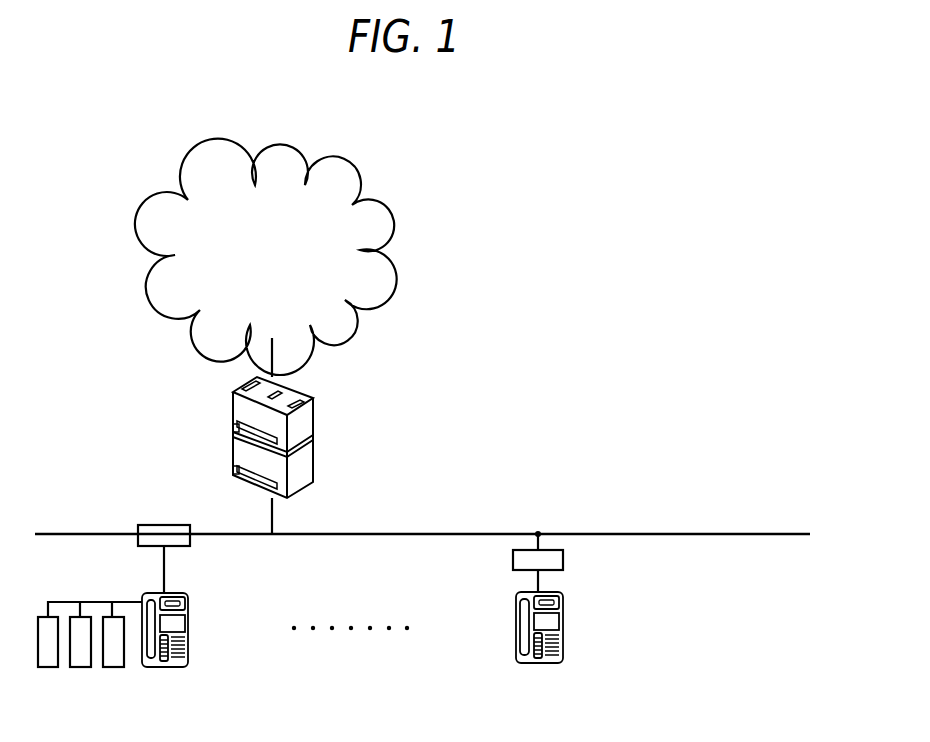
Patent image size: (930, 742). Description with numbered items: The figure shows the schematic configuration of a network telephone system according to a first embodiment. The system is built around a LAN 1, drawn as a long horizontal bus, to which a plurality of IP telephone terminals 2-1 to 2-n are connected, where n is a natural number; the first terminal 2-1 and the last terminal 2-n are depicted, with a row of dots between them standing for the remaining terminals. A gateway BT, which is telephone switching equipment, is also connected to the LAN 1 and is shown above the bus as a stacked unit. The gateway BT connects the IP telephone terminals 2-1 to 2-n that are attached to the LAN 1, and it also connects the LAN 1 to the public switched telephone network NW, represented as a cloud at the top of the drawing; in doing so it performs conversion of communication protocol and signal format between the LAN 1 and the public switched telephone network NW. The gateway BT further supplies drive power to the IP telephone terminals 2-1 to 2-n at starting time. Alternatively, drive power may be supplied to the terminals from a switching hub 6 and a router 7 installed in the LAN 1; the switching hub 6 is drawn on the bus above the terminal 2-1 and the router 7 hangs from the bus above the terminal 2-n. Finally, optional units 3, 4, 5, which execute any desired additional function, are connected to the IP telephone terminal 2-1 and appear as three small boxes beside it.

The LAN 1 is at (760, 533).
The public switched telephone network NW is at (275, 170).
The gateway BT is at (315, 462).
The switching hub 6 is at (149, 524).
The router 7 is at (565, 562).
The optional unit 5 is at (44, 668).
The optional unit 4 is at (77, 668).
The optional unit 3 is at (110, 668).
The IP telephone terminal 2-1 is at (180, 668).
The IP telephone terminal 2-n is at (555, 664).